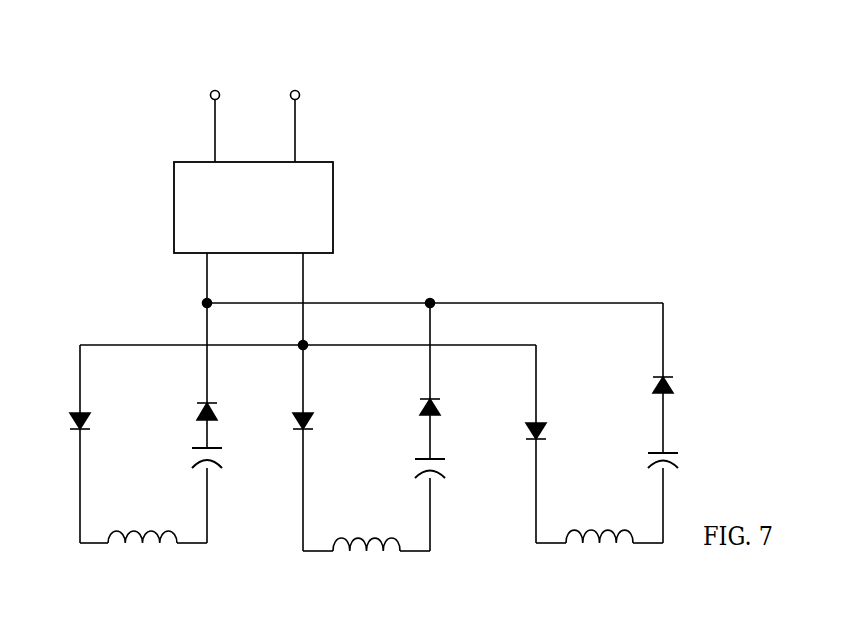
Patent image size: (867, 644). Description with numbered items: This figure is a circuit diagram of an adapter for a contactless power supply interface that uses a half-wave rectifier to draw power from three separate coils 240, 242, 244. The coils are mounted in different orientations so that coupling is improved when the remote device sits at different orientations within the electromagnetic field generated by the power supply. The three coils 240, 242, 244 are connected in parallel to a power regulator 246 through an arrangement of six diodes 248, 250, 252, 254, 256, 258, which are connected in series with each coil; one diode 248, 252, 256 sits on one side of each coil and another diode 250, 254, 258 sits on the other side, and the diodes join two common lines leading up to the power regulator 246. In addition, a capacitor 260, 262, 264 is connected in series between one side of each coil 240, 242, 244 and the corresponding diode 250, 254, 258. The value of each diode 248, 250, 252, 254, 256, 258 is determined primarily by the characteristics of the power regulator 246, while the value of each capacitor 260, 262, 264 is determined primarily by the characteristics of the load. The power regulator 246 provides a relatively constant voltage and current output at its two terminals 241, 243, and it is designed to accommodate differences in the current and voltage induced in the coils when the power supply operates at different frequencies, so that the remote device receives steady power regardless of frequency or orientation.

The output terminal 241 is at (216, 89).
The output terminal 243 is at (294, 89).
The power regulator 246 is at (333, 183).
The diode 248 is at (77, 412).
The diode 250 is at (191, 402).
The diode 252 is at (287, 418).
The diode 254 is at (414, 400).
The diode 256 is at (541, 422).
The diode 258 is at (680, 378).
The capacitor 260 is at (177, 458).
The capacitor 262 is at (402, 468).
The capacitor 264 is at (635, 452).
The coil 240 is at (142, 558).
The coil 242 is at (366, 566).
The coil 244 is at (600, 557).